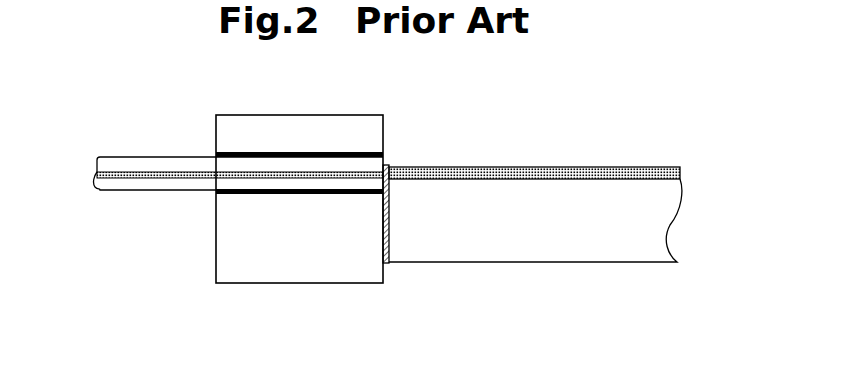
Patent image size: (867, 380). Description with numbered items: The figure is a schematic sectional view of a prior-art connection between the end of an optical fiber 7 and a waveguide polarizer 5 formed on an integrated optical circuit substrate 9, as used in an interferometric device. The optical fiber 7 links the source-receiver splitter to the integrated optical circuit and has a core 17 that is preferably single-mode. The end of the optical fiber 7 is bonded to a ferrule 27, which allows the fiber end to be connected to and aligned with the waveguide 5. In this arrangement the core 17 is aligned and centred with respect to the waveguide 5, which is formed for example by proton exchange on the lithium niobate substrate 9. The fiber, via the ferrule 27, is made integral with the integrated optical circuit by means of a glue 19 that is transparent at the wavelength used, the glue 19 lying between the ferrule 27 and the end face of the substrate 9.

The waveguide polarizer 5 is at (523, 167).
The optical fiber 7 is at (148, 157).
The integrated optical circuit substrate 9 is at (495, 236).
The core 17 is at (137, 184).
The glue 19 is at (385, 265).
The ferrule 27 is at (277, 249).